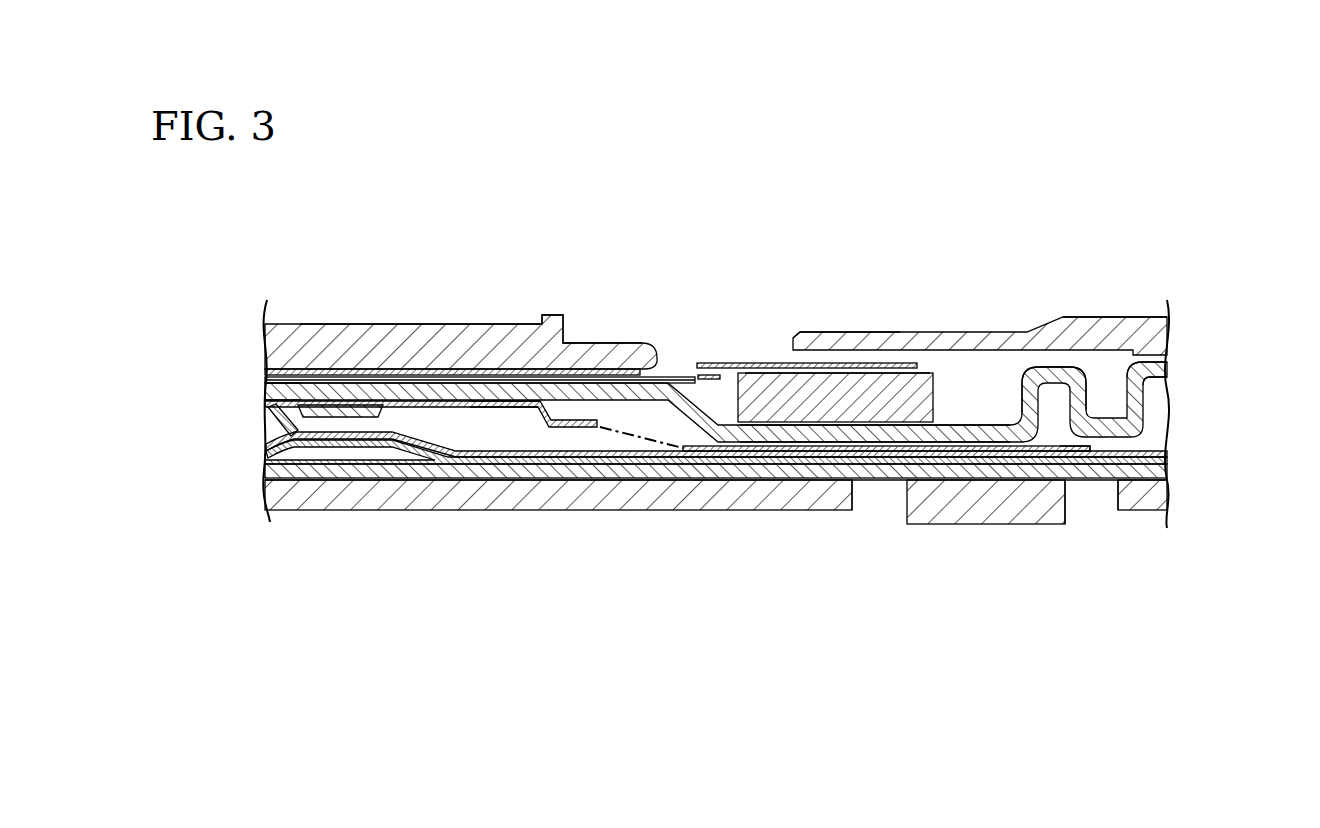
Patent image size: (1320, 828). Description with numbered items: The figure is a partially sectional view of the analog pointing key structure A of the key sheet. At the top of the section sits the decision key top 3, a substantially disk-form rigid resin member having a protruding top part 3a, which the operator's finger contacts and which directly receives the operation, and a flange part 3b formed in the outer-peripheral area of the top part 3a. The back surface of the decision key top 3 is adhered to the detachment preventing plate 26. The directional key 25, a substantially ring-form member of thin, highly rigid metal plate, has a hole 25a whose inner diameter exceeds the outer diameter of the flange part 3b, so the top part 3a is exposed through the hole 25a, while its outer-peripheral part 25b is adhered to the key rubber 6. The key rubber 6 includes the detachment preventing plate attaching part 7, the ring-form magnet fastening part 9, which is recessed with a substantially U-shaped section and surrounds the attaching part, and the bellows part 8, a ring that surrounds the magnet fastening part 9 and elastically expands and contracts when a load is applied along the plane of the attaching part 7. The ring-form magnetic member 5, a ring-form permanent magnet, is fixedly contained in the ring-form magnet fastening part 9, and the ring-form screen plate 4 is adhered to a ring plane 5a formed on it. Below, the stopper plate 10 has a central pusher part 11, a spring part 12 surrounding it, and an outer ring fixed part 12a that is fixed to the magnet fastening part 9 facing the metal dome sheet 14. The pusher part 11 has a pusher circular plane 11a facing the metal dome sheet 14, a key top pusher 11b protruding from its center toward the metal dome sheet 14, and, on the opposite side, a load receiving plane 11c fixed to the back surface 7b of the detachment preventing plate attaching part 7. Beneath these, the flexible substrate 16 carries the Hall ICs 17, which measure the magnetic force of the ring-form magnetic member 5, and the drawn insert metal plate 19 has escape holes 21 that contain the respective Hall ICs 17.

The analog pointing key structure A is at (900, 246).
The decision key top 3 is at (345, 330).
The top part 3a is at (410, 325).
The flange part 3b is at (588, 344).
The screen plate 4 is at (718, 363).
The ring-form magnetic member 5 is at (925, 382).
The ring plane 5a is at (830, 372).
The key rubber 6 is at (1150, 378).
The detachment preventing plate attaching part 7 is at (512, 388).
The back surface 7b is at (296, 413).
The bellows part 8 is at (1078, 370).
The ring-form magnet fastening part 9 is at (990, 423).
The stopper plate 10 is at (1088, 455).
The pusher part 11 is at (288, 428).
The pusher circular plane 11a is at (520, 408).
The key top pusher 11b is at (345, 448).
The load receiving plane 11c is at (400, 400).
The spring part 12 is at (578, 426).
The outer ring fixed part 12a is at (735, 451).
The metal dome sheet 14 is at (432, 452).
The flexible substrate 16 is at (1080, 474).
The Hall IC 17 is at (990, 526).
The insert metal plate 19 is at (775, 500).
The escape hole 21 is at (853, 492).
The directional key 25 is at (968, 332).
The hole 25a is at (793, 342).
The outer-peripheral part 25b is at (1128, 322).
The detachment preventing plate 26 is at (648, 380).